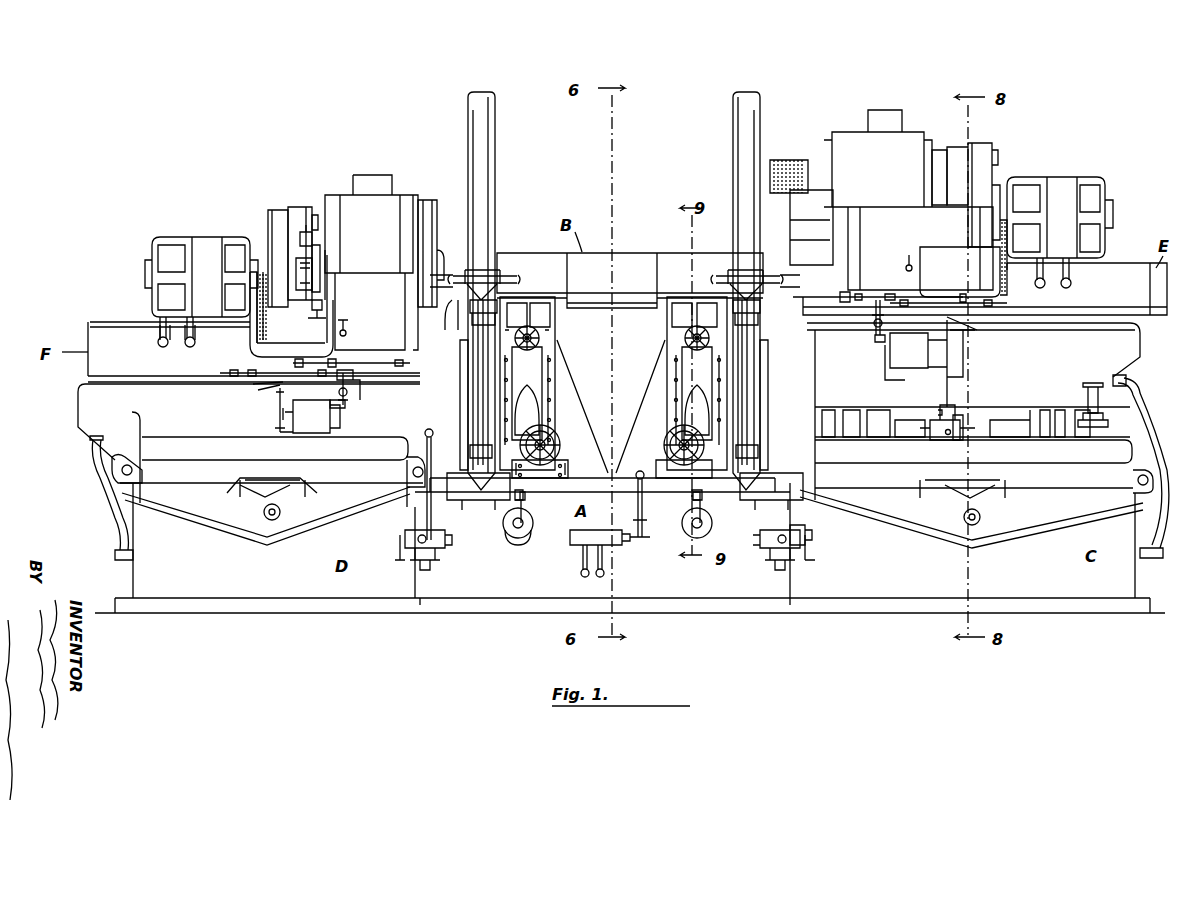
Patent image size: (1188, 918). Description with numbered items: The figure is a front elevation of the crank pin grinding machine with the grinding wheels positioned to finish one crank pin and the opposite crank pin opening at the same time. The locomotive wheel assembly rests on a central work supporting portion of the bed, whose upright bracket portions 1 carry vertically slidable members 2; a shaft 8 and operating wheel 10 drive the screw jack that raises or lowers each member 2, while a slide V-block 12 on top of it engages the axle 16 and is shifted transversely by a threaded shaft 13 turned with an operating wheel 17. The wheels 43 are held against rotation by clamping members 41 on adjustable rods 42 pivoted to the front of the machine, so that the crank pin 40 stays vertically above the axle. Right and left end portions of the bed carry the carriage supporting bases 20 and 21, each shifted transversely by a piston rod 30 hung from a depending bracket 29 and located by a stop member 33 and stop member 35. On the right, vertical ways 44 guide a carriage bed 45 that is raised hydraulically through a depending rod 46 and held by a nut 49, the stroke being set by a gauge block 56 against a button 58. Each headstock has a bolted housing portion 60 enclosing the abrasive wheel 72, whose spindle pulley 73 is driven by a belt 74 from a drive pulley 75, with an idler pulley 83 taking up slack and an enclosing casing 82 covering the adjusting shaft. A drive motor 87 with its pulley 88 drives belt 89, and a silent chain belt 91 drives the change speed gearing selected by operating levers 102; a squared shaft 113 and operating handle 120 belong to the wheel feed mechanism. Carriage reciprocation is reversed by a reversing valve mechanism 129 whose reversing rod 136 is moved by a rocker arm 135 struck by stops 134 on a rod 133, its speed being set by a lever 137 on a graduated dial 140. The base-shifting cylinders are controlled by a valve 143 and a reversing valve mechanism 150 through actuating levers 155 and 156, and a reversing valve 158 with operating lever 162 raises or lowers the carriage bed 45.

The upright bracket portion 1 is at (565, 410).
The member 2 is at (535, 377).
The shaft 8 is at (556, 445).
The operating wheel 10 is at (560, 451).
The slide V-block 12 is at (555, 321).
The threaded shaft 13 is at (540, 339).
The axle 16 is at (636, 265).
The operating wheel 17 is at (545, 357).
The carriage supporting base 20 is at (973, 411).
The carriage supporting base 21 is at (93, 408).
The depending bracket 29 is at (260, 512).
The piston rod 30 is at (272, 520).
The stop member 33 is at (100, 492).
The stop member 35 is at (112, 468).
The crank pin 40 is at (805, 227).
The clamping member 41 is at (488, 272).
The adjustable rod 42 is at (478, 348).
The wheel 43 is at (752, 115).
The vertical ways 44 is at (1058, 430).
The carriage bed 45 is at (1115, 455).
The depending rod 46 is at (935, 430).
The nut 49 is at (958, 438).
The gauge block 56 is at (1088, 395).
The button 58 is at (1083, 418).
The housing portion 60 is at (384, 188).
The abrasive wheel 72 is at (786, 160).
The belt pulley 73 is at (312, 280).
The belt 74 is at (302, 208).
The drive pulley 75 is at (294, 208).
The enclosing casing 82 is at (428, 205).
The idler pulley 83 is at (312, 238).
The drive motor 87 is at (158, 248).
The pulley 88 is at (270, 268).
The belt 89 is at (276, 210).
The silent chain belt 91 is at (257, 340).
The operating lever 102 is at (185, 340).
The squared shaft 113 is at (316, 312).
The operating handle 120 is at (346, 328).
The reversing valve mechanism 129 is at (300, 433).
The rod 133 is at (400, 378).
The stop 134 is at (340, 360).
The rocker arm 135 is at (346, 400).
The reversing rod 136 is at (340, 410).
The lever 137 is at (524, 500).
The graduated dial 140 is at (526, 533).
The valve 143 is at (427, 525).
The reversing valve mechanism 150 is at (815, 542).
The actuating lever 155 is at (448, 552).
The actuating lever 156 is at (766, 560).
The reversing valve 158 is at (583, 572).
The operating lever 162 is at (637, 540).